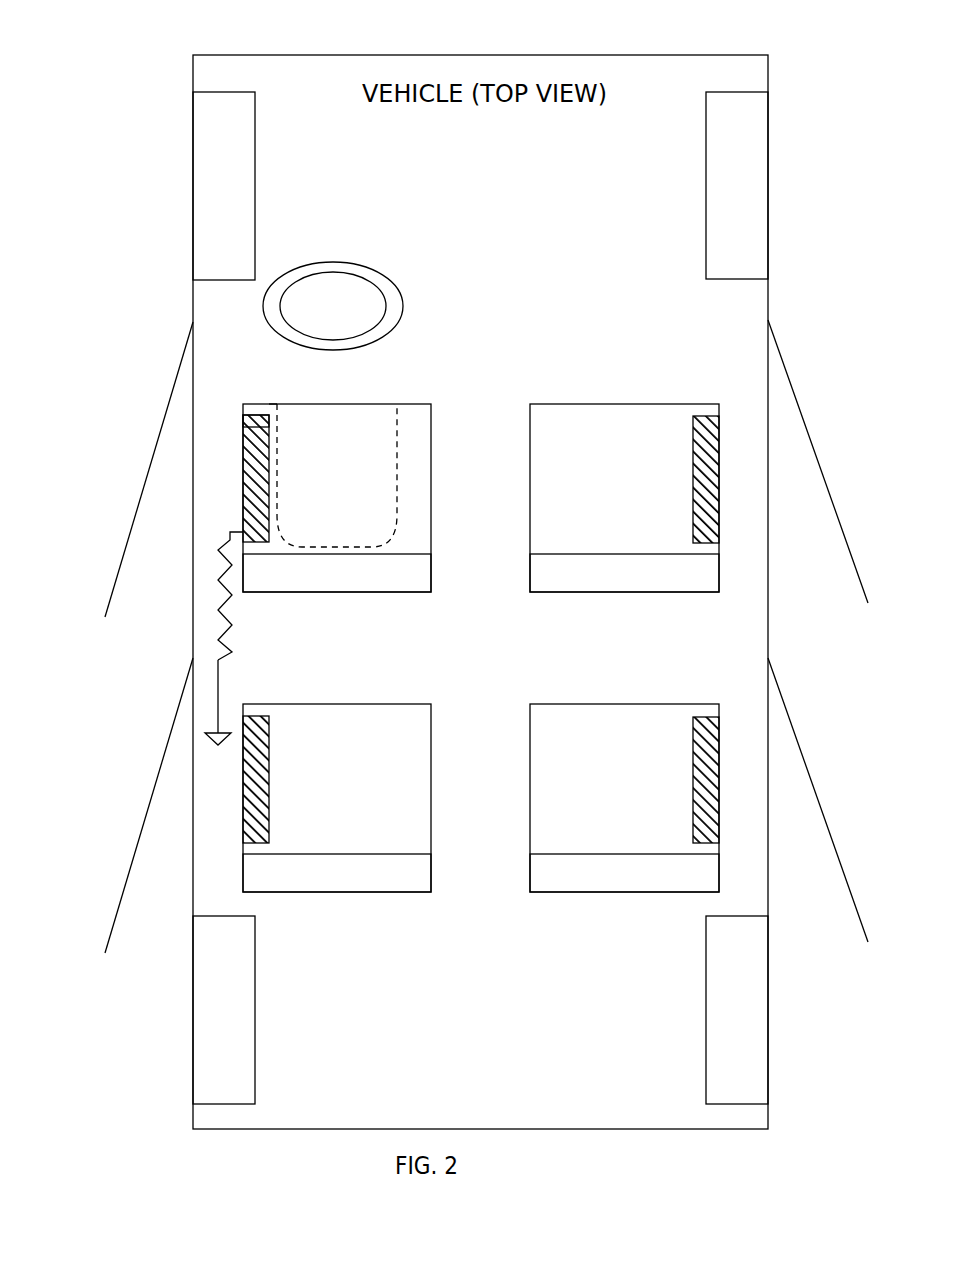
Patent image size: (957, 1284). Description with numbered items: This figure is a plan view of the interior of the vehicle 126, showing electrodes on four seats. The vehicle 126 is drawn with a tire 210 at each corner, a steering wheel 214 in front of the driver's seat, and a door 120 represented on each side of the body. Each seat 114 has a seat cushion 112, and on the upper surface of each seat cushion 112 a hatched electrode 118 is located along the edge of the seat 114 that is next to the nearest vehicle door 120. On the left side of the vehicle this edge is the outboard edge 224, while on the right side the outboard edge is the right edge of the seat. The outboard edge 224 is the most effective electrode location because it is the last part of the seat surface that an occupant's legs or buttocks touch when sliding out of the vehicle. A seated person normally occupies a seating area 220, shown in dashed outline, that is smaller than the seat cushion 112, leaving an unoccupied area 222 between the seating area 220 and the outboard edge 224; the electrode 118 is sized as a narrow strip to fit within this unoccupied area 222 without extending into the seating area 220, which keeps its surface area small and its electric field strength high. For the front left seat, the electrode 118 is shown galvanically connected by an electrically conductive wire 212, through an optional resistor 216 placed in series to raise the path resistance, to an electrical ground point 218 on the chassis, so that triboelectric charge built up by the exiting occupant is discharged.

The vehicle 126 is at (333, 55).
The tire 210 is at (255, 153).
The steering wheel 214 is at (403, 283).
The seat cushion 112 is at (430, 404).
The seat 114 is at (431, 592).
The electrode 118 is at (243, 501).
The outboard edge of seat 224 is at (243, 413).
The unoccupied area 222 is at (263, 412).
The seating area 220 is at (372, 418).
The optional resistor 216 is at (232, 617).
The wire 212 is at (218, 686).
The electrical ground point 218 is at (216, 747).
The door 120 is at (113, 591).